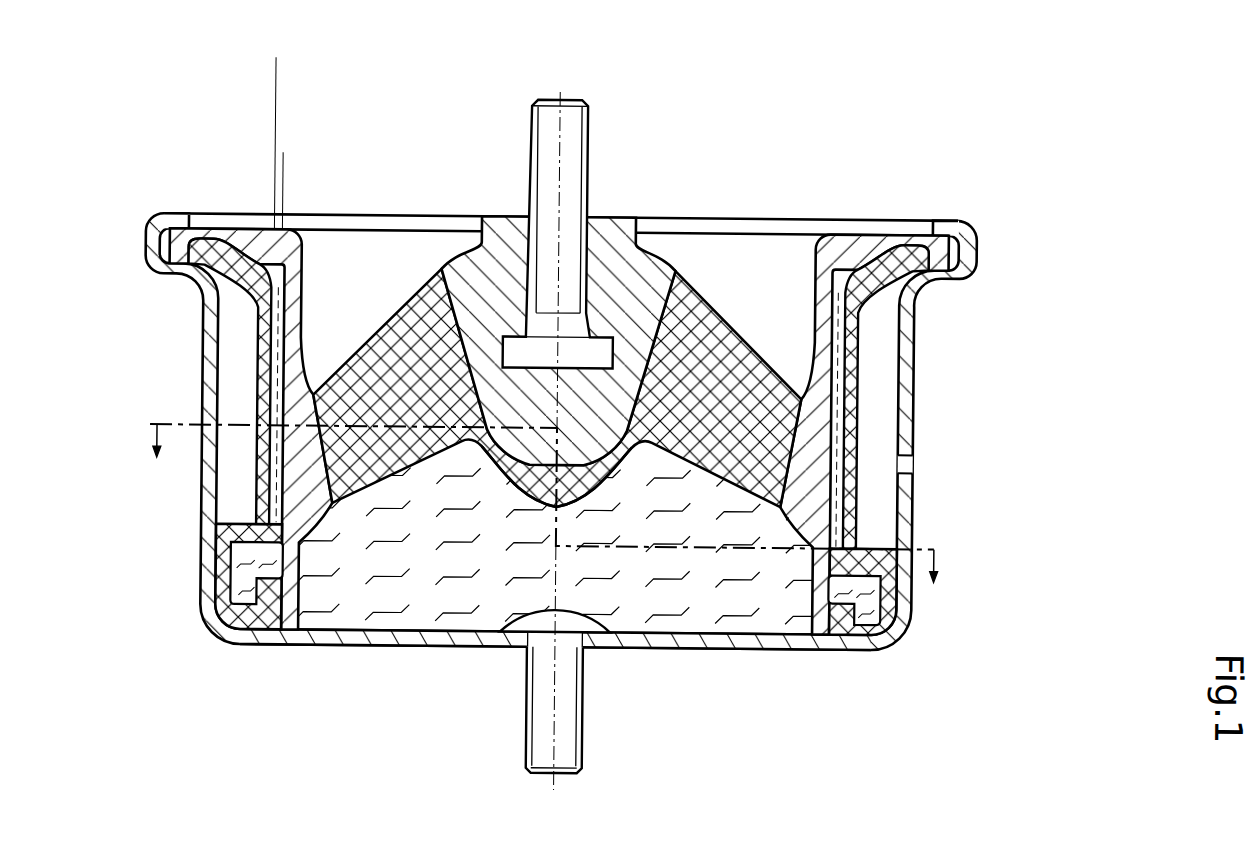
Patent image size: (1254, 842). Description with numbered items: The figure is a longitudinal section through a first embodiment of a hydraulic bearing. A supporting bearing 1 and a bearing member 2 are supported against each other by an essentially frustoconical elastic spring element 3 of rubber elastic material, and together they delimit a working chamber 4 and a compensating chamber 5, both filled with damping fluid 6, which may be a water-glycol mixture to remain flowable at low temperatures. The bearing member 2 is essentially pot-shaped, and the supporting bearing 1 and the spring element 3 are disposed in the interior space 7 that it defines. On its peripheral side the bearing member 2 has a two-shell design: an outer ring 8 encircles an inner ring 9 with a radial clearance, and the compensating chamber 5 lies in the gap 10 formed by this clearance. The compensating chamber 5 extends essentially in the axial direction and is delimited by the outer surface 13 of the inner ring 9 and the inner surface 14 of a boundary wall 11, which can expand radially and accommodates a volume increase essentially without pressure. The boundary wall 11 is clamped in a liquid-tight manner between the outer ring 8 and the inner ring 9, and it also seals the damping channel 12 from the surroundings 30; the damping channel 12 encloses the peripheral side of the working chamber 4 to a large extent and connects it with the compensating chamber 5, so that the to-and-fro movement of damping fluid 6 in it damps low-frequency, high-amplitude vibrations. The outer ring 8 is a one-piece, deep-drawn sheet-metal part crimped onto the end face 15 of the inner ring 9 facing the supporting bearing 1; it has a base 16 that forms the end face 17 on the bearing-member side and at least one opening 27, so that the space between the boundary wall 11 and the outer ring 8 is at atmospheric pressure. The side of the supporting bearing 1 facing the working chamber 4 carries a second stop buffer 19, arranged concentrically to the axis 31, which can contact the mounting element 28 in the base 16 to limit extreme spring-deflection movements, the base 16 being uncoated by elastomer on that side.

The supporting bearing 1 is at (602, 273).
The bearing member 2 is at (347, 639).
The elastic spring element 3 is at (710, 300).
The working chamber 4 is at (714, 574).
The compensating chamber 5 is at (848, 492).
The damping fluid 6 is at (453, 580).
The interior space 7 is at (788, 373).
The outer ring 8 is at (212, 393).
The inner ring 9 is at (303, 315).
The gap 10 is at (233, 483).
The boundary wall 11 is at (258, 382).
The damping channel 12 is at (880, 605).
The outer surface 13 is at (283, 178).
The inner surface 14 is at (283, 93).
The end face 15 is at (845, 235).
The base 16 is at (643, 642).
The end face 17 is at (846, 657).
The second stop buffer 19 is at (557, 506).
The opening 27 is at (906, 461).
The mounting element 28 is at (543, 747).
The surroundings 30 is at (1046, 414).
The axis 31 is at (562, 92).